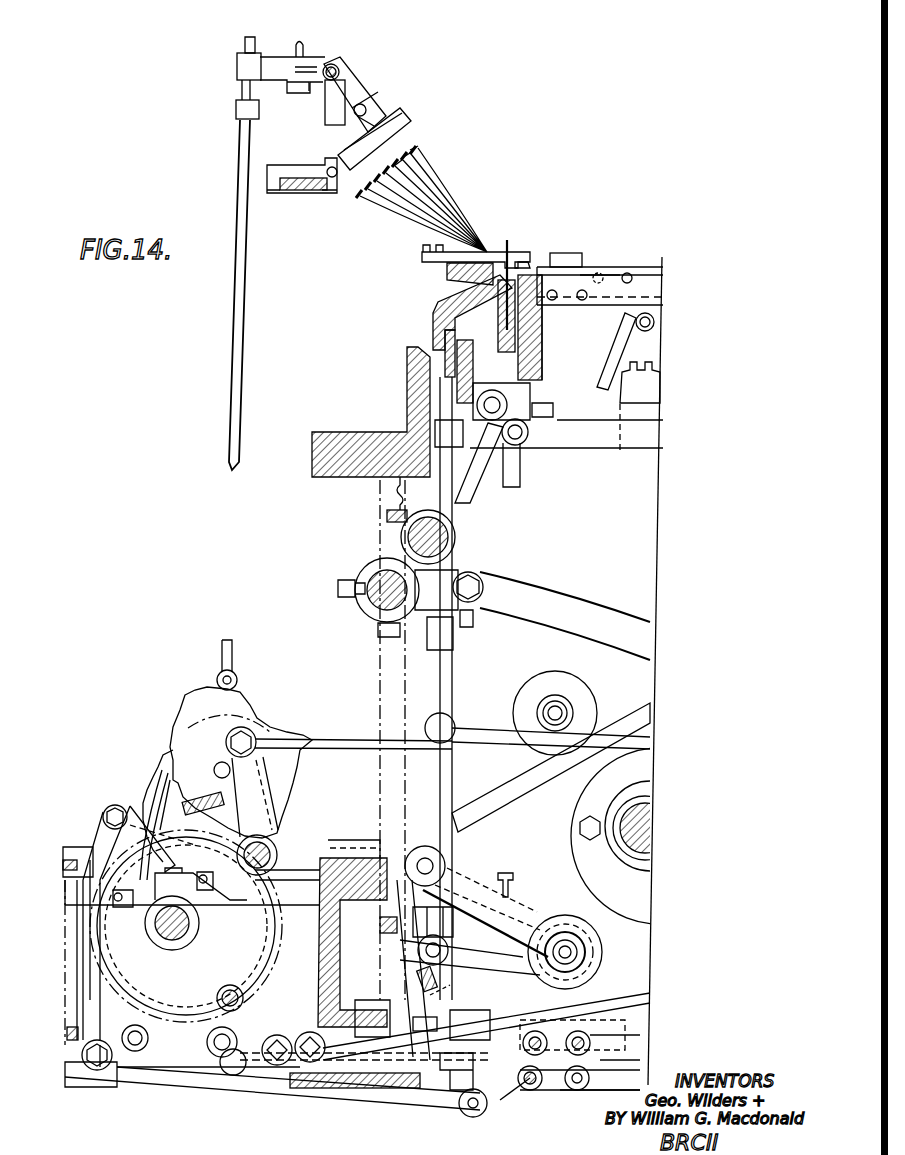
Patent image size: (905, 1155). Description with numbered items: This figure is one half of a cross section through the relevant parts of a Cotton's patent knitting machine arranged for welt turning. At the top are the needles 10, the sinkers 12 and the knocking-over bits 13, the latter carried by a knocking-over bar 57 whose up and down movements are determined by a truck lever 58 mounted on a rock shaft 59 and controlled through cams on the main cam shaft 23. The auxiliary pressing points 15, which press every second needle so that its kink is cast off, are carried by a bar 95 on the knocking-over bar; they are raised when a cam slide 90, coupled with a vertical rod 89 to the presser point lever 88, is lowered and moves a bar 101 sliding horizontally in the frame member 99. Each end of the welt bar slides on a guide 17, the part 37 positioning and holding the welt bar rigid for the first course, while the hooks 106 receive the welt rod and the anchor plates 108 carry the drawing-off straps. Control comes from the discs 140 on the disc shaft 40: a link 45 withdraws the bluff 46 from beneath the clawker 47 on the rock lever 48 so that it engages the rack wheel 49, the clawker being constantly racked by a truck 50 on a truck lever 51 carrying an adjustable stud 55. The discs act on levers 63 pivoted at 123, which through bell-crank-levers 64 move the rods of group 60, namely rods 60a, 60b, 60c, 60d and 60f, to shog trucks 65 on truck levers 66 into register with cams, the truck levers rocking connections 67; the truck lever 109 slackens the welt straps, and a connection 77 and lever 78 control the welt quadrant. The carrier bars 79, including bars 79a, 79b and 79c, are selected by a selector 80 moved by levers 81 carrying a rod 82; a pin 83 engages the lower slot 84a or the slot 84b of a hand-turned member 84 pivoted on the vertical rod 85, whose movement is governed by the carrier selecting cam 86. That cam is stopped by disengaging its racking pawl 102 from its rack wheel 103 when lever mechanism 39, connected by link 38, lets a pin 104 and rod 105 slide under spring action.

The needles 10 is at (507, 250).
The sinkers 12 is at (438, 258).
The knocking-over bits 13 is at (524, 260).
The presser bit 15 is at (542, 320).
The guide 17 is at (600, 295).
The main cam shaft 23 is at (640, 805).
The welt bar positioning part 37 is at (565, 253).
The link 38 is at (248, 1065).
The lever mechanism 39 is at (210, 1040).
The disc shaft 40 is at (160, 930).
The link 45 is at (148, 1060).
The bluff 46 is at (92, 888).
The clawker 47 is at (95, 838).
The rock lever 48 is at (105, 830).
The rack wheel 49 is at (88, 908).
The truck 50 is at (582, 702).
The truck lever 51 is at (490, 798).
The adjustable stud 55 is at (430, 1018).
The knocking-over bar 57 is at (460, 297).
The truck lever 58 is at (600, 613).
The rock shaft 59 is at (380, 600).
The group of control rods 60 is at (352, 1072).
The control rod 60a is at (520, 1010).
The control rod 60b is at (533, 1092).
The control rod 60c is at (590, 1082).
The control rod 60d is at (592, 1045).
The control rod 60f is at (528, 1080).
The levers 63 is at (295, 1080).
The bell-crank-levers 64 is at (462, 1000).
The trucks 65 is at (560, 918).
The truck levers 66 is at (400, 794).
The connections 67 is at (468, 728).
The connection 77 is at (330, 738).
The lever 78 is at (262, 790).
The carrier bars 79 is at (410, 150).
The carrier bar 79a is at (413, 147).
The carrier bar 79b is at (412, 157).
The welt carrier bar 79c is at (420, 160).
The selector 80 is at (397, 128).
The levers 81 is at (352, 80).
The rod 82 is at (370, 100).
The pin 83 is at (307, 63).
The member 84 is at (296, 70).
The lower slot 84a is at (297, 88).
The slot 84b is at (302, 62).
The vertical rod 85 is at (235, 330).
The carrier selecting cam 86 is at (195, 703).
The lever 88 is at (460, 941).
The vertical rod 89 is at (452, 656).
The cam slide 90 is at (460, 496).
The bar 95 is at (530, 362).
The frame member 99 is at (407, 368).
The bar 101 is at (395, 480).
The racking pawl 102 is at (158, 785).
The rack wheel 103 is at (170, 760).
The pin 104 is at (272, 845).
The rod 105 is at (322, 845).
The hooks 106 is at (605, 275).
The anchor plates 108 is at (605, 380).
The truck lever 109 is at (520, 905).
The pivot 123 is at (275, 858).
The discs 140 is at (98, 950).